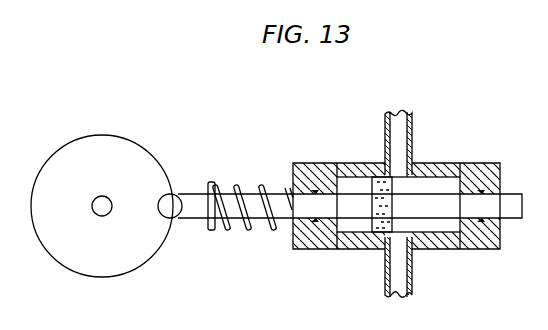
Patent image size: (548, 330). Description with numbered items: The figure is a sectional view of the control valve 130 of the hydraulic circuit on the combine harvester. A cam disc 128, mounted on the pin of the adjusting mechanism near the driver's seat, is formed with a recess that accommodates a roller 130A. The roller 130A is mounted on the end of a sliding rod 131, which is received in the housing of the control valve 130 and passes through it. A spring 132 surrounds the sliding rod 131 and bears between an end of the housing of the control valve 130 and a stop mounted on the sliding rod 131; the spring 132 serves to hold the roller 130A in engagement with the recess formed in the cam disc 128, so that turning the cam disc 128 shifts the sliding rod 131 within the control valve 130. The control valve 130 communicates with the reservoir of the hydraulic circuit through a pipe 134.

The cam disc 128 is at (110, 142).
The control valve 130 is at (478, 170).
The roller 130A is at (173, 198).
The sliding rod 131 is at (193, 212).
The spring 132 is at (258, 228).
The pipe 134 is at (388, 123).